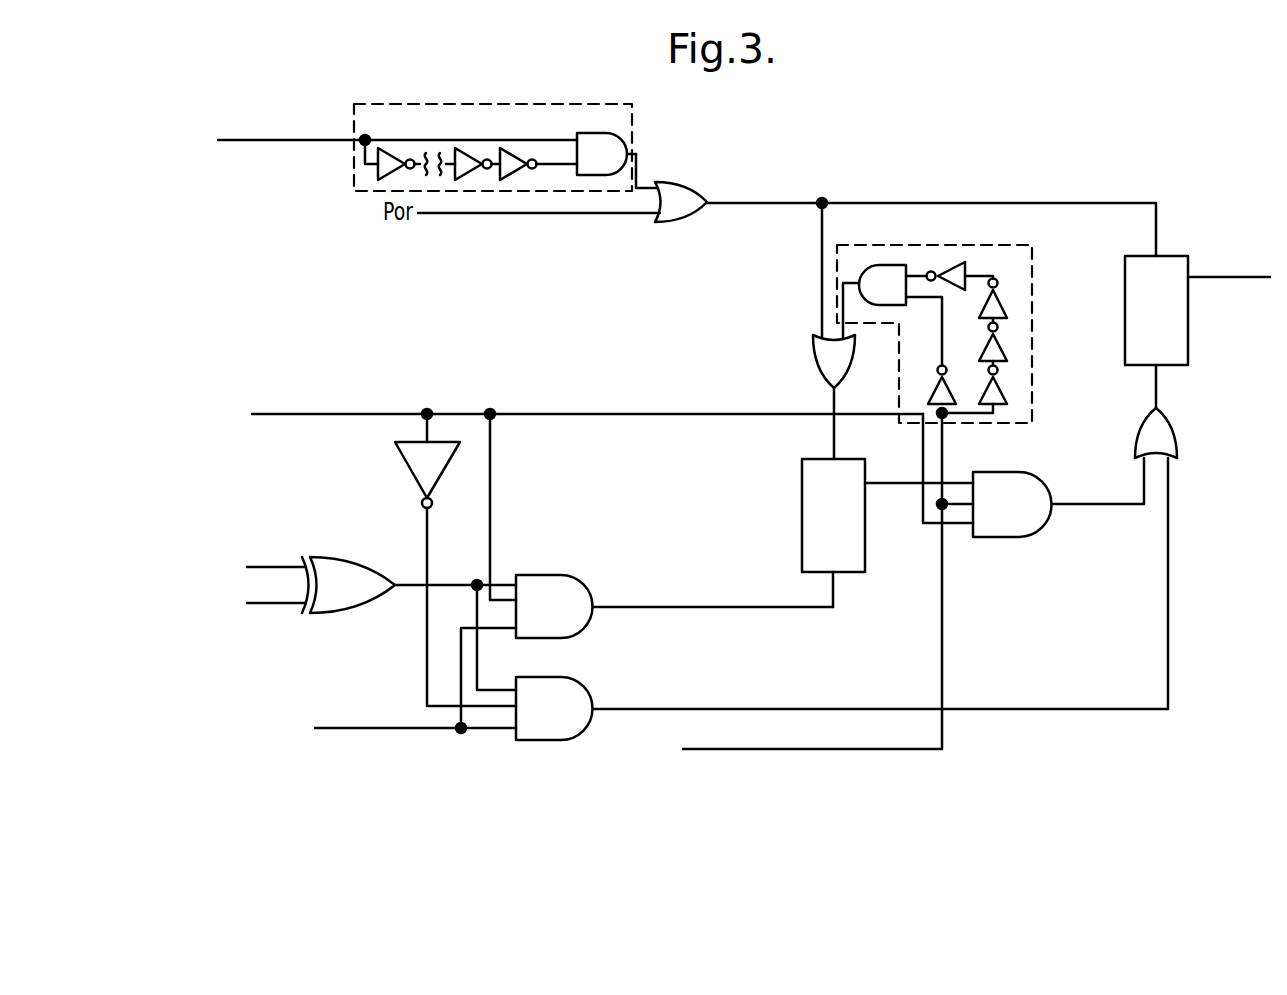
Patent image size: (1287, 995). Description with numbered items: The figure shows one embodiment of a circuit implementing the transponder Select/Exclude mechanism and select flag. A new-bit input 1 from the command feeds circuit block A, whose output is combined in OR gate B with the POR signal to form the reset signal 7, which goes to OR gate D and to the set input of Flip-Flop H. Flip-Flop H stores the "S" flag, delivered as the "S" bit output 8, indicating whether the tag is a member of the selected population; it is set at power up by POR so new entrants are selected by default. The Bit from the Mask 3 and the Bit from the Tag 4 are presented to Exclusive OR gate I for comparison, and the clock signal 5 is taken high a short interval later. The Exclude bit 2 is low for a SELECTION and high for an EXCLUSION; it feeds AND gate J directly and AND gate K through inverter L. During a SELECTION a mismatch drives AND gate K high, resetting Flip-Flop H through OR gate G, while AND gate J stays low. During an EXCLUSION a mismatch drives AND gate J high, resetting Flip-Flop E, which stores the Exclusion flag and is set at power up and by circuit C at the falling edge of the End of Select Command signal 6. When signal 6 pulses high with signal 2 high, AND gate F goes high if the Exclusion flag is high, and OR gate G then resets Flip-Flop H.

The new bit from command input 1 is at (373, 158).
The Exclude bit from the command 2 is at (558, 477).
The Bit from the Mask 3 is at (244, 538).
The Bit from the Tag 4 is at (234, 629).
The clock signal 5 is at (404, 699).
The End of Select Command signal 6 is at (810, 592).
The reset signal 7 is at (931, 252).
The S bit output 8 is at (1229, 247).
The delay chain with AND gate A is at (505, 147).
The OR gate B is at (681, 202).
The circuit C is at (934, 334).
The OR gate D is at (834, 397).
The Flip-Flop E is at (887, 533).
The AND gate F is at (1033, 475).
The OR gate G is at (1156, 433).
The Flip-Flop H is at (1156, 332).
The Exclusive OR gate I is at (409, 623).
The AND gate J is at (647, 651).
The AND gate K is at (842, 599).
The inverter L is at (455, 560).